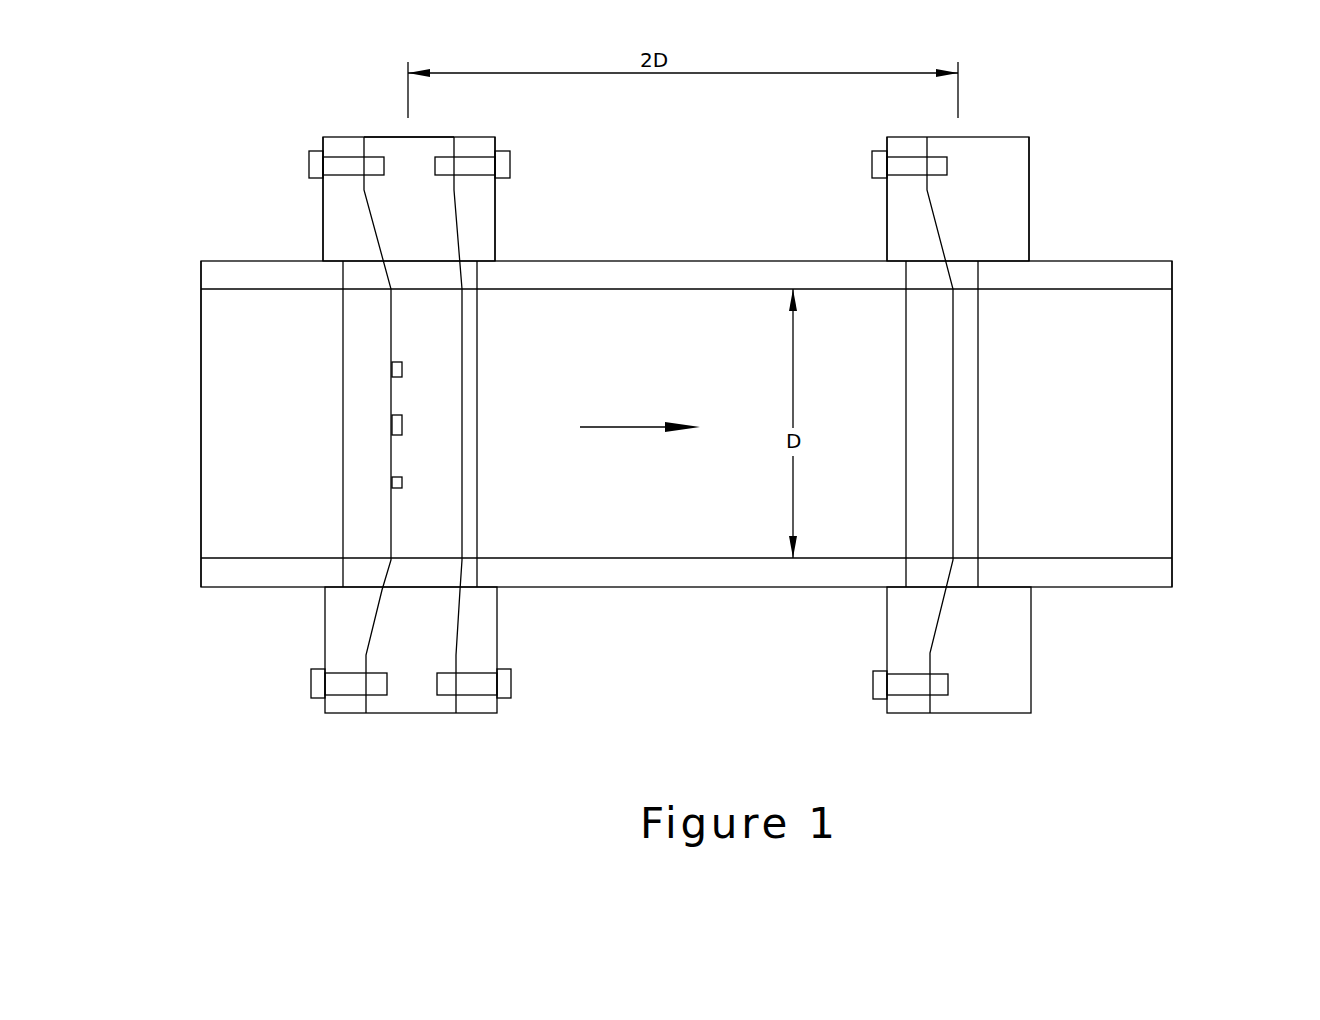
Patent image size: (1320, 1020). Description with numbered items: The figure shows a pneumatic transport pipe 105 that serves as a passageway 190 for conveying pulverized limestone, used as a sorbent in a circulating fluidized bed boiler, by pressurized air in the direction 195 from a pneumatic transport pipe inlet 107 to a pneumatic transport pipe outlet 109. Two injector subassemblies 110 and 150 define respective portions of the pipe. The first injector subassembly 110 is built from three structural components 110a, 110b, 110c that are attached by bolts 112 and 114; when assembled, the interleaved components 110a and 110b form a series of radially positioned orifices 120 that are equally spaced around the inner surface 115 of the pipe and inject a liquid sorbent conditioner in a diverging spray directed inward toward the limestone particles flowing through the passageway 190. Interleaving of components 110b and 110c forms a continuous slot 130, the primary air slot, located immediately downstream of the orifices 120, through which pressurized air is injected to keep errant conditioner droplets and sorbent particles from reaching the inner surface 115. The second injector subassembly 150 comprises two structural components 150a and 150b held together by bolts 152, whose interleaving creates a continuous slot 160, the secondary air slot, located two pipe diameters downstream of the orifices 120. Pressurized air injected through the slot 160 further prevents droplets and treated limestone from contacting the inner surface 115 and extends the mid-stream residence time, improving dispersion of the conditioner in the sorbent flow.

The pneumatic transport pipe 105 is at (1130, 262).
The pneumatic transport pipe inlet 107 is at (201, 381).
The pneumatic transport pipe outlet 109 is at (1130, 425).
The injector subassembly 110 is at (492, 137).
The structural component 110a is at (349, 233).
The structural component 110b is at (408, 155).
The structural component 110c is at (470, 217).
The bolt 112 is at (350, 156).
The bolt 114 is at (471, 167).
The inner surface 115 is at (242, 292).
The orifices 120 is at (390, 376).
The continuous slot 130 is at (463, 507).
The injector subassembly 150 is at (1030, 137).
The structural component 150a is at (902, 233).
The structural component 150b is at (997, 233).
The bolt 152 is at (917, 157).
The continuous slot 160 is at (955, 478).
The passageway 190 is at (823, 523).
The direction 195 is at (645, 425).